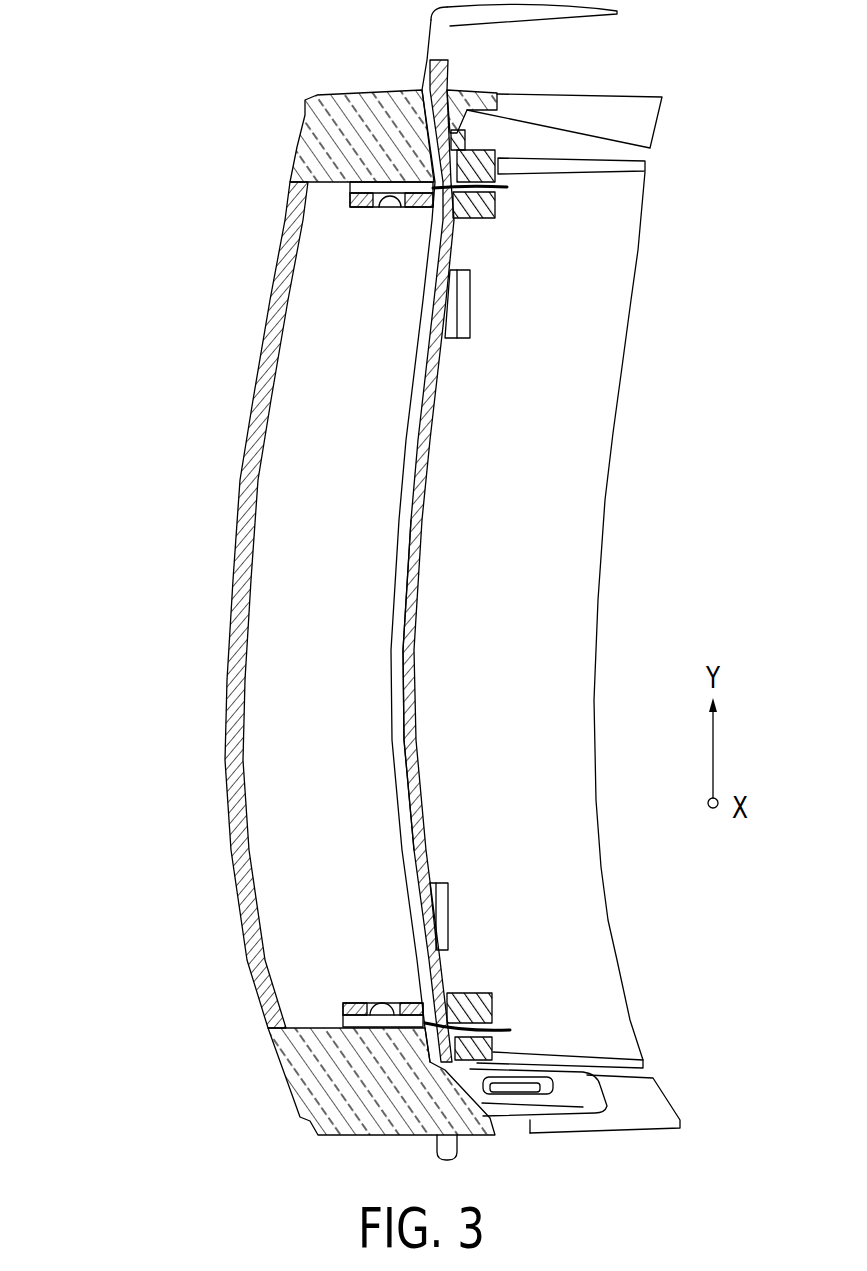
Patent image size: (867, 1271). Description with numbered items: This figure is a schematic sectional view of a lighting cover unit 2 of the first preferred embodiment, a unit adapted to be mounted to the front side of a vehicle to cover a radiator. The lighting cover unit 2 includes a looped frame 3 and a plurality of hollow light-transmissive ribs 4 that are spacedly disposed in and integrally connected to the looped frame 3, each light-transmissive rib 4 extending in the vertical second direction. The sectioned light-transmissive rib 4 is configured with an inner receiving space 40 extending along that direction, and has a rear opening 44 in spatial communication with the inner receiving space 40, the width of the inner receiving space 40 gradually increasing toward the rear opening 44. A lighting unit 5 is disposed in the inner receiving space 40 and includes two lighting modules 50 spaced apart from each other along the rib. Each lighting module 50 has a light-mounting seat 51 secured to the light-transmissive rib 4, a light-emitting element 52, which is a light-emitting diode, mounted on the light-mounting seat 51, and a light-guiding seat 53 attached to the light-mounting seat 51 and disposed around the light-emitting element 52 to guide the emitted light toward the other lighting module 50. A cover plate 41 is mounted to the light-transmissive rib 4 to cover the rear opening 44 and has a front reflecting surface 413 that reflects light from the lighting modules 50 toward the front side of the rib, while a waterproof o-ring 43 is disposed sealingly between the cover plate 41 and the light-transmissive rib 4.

The lighting cover unit 2 is at (672, 206).
The looped frame 3 is at (605, 97).
The light-transmissive rib 4 is at (258, 347).
The inner receiving space 40 is at (285, 620).
The cover plate 41 is at (417, 527).
The front reflecting surface 413 is at (406, 668).
The rear opening 44 is at (400, 602).
The waterproof o-ring 43 is at (463, 97).
The lighting unit 5 is at (182, 107).
The lighting module 50 is at (348, 572).
The light-mounting seat 51 is at (360, 183).
The light-emitting element 52 is at (387, 197).
The light-guiding seat 53 is at (350, 200).